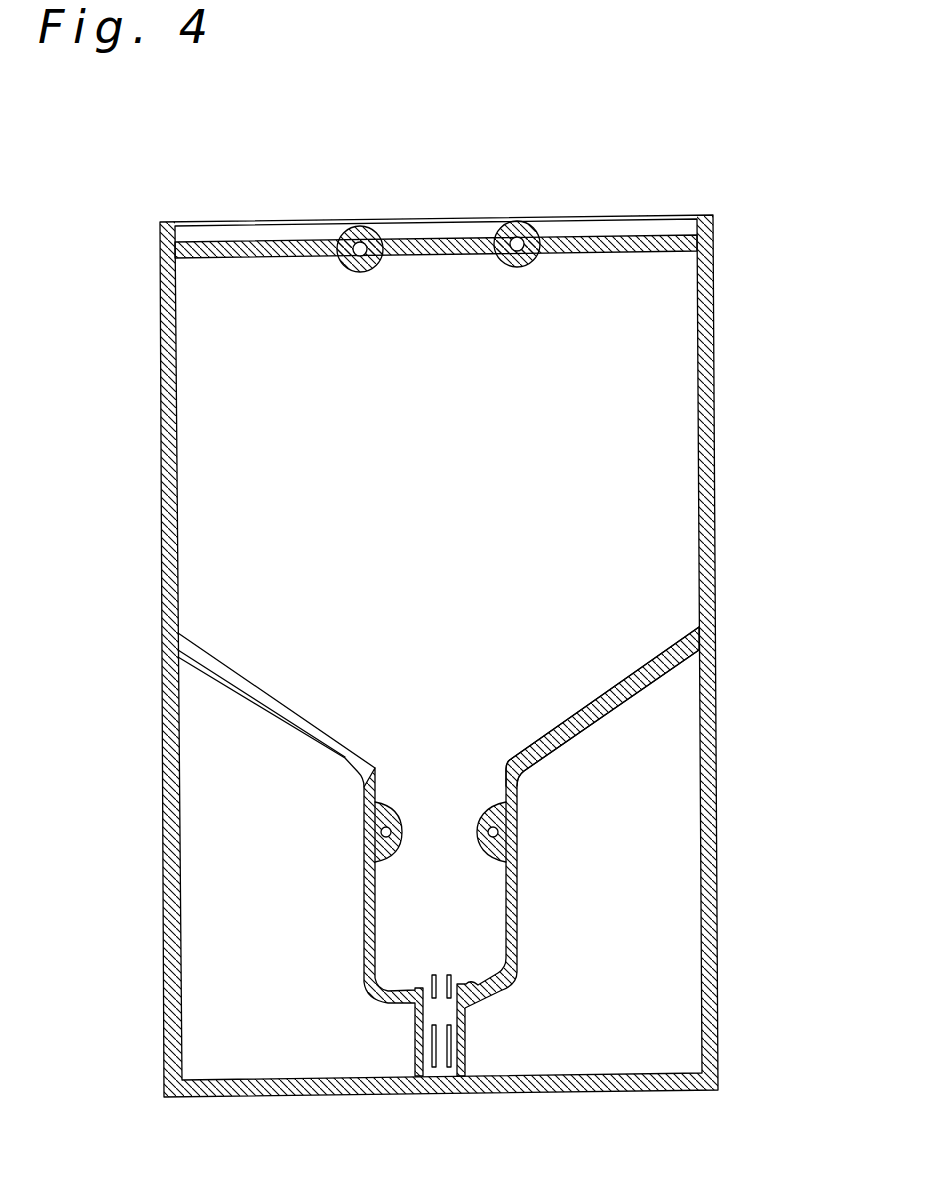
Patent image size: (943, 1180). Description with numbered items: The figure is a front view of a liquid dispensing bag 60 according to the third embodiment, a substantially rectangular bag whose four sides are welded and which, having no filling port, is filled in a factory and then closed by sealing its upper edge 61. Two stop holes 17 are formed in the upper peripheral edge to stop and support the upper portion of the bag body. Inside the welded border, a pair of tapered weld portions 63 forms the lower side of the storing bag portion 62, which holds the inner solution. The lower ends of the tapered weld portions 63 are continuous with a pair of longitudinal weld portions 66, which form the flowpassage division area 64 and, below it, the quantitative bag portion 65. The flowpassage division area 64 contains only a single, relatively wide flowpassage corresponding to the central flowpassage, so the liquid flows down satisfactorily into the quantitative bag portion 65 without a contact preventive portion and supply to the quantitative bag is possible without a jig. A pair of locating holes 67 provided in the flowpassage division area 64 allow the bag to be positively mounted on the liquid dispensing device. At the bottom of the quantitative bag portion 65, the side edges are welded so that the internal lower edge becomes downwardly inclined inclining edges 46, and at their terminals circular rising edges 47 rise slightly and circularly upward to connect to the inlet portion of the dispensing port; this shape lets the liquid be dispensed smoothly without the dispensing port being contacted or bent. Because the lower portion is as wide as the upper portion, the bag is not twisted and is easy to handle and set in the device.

The stop hole 17 is at (367, 226).
The inclining edge 46 is at (489, 985).
The circular rising edge 47 is at (478, 1002).
The liquid dispensing bag 60 is at (715, 382).
The upper edge 61 is at (610, 243).
The storing bag portion 62 is at (672, 513).
The tapered weld portion 63 is at (623, 692).
The flowpassage division area 64 is at (465, 828).
The quantitative bag portion 65 is at (487, 897).
The longitudinal weld portion 66 is at (518, 926).
The locating hole 67 is at (498, 832).